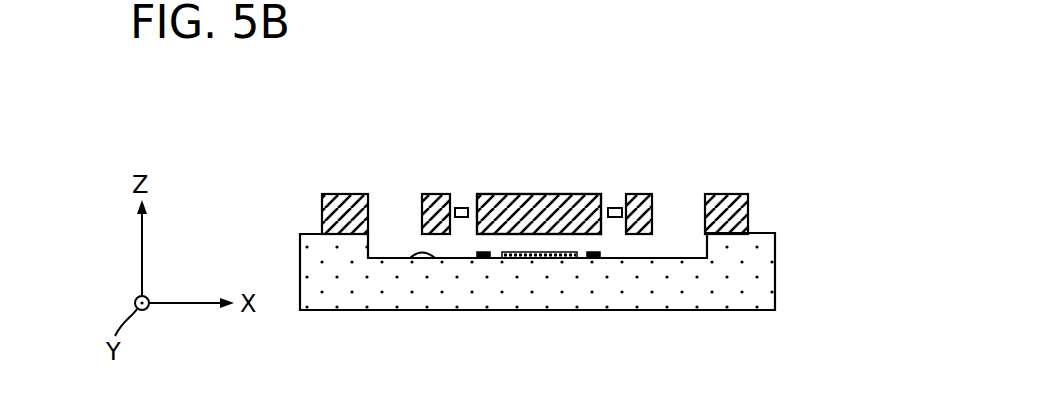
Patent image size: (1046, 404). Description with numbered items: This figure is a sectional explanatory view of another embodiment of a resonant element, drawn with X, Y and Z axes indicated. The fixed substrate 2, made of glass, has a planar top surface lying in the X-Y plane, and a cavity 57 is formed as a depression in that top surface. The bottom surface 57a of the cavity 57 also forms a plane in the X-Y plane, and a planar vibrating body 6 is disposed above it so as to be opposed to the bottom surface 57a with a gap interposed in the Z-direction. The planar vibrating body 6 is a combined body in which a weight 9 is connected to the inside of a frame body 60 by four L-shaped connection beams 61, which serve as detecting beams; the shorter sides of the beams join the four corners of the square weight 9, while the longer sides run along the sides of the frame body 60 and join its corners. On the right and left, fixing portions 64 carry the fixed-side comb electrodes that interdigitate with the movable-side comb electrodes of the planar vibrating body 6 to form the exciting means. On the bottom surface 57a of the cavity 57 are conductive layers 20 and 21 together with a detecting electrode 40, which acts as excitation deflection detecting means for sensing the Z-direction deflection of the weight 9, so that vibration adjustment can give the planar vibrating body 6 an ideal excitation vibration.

The fixed substrate 2 is at (775, 272).
The planar vibrating body 6 is at (515, 188).
The weight 9 is at (567, 194).
The conductive layer 20 is at (483, 258).
The conductive layer 21 is at (593, 258).
The detecting electrode 40 is at (537, 258).
The cavity 57 is at (678, 250).
The bottom surface of cavity 57a is at (415, 259).
The frame body 60 is at (422, 215).
The connection beam 61 is at (462, 208).
The fixing portion 64 is at (345, 194).